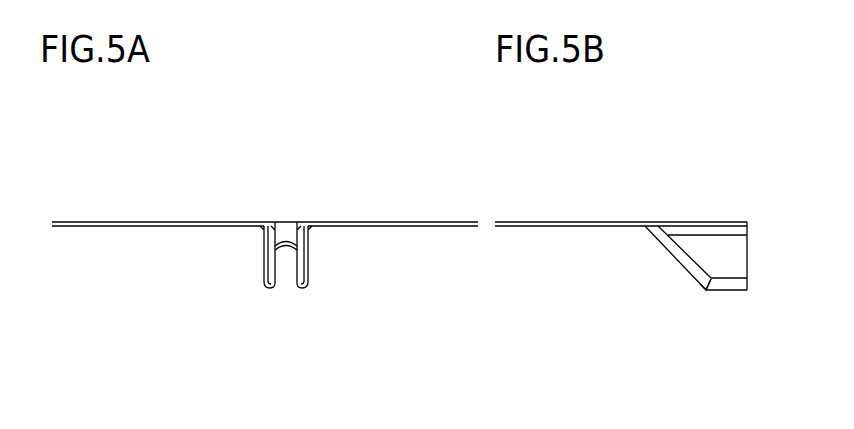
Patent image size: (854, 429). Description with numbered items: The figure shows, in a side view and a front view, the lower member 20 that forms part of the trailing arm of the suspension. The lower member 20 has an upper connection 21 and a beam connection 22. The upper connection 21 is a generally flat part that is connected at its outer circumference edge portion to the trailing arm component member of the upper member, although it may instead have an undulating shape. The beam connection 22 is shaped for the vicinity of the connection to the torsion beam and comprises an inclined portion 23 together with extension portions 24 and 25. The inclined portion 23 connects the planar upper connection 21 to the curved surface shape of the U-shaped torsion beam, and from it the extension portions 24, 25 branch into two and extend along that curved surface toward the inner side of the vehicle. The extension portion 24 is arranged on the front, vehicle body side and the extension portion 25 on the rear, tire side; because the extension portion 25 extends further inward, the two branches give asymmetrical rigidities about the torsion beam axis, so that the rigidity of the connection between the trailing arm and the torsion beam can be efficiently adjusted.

In FIG. 5A, the lower member 20 is at (93, 107).
In FIG. 5A, the upper connection 21 is at (114, 222).
In FIG. 5A, the beam connection 22 is at (323, 341).
In FIG. 5A, the inclined portion 23 is at (288, 252).
In FIG. 5B, the inclined portion 23 is at (681, 259).
In FIG. 5A, the extension portion 24 is at (305, 289).
In FIG. 5B, the extension portion 24 is at (712, 292).
In FIG. 5A, the extension portion 25 is at (266, 289).
In FIG. 5B, the extension portion 25 is at (712, 292).